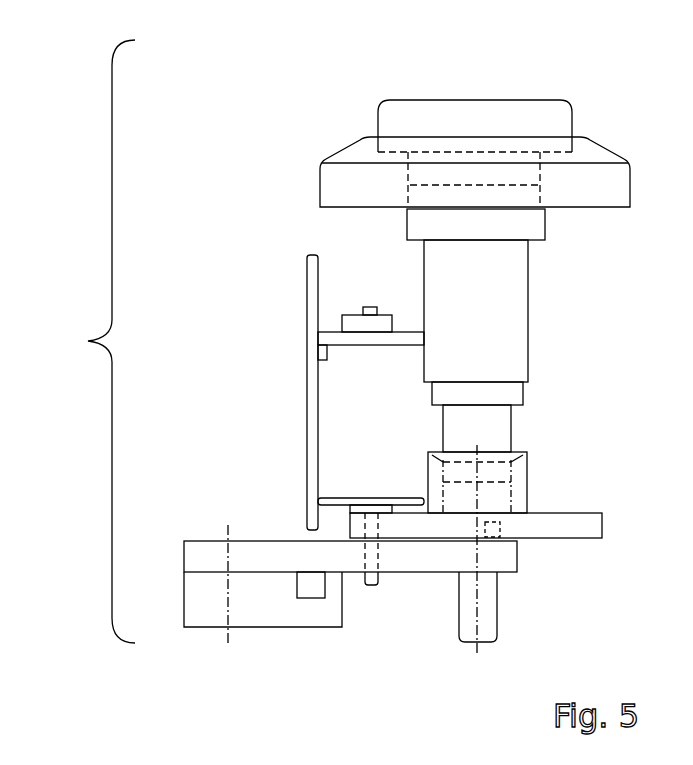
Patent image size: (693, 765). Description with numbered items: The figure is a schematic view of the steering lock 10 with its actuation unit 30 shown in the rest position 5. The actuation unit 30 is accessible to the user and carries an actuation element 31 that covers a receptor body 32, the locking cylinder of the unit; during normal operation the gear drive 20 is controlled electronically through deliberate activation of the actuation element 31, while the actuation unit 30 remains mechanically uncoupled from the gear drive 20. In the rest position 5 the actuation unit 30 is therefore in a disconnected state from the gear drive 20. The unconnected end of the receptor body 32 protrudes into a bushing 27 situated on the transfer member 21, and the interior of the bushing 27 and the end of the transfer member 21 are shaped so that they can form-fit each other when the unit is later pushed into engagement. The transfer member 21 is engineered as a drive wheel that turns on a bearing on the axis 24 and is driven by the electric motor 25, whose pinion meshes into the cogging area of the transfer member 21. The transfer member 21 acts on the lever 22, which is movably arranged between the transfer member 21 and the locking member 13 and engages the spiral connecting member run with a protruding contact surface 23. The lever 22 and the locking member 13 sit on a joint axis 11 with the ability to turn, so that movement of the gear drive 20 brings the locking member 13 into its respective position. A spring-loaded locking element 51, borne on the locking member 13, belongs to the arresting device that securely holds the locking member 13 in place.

The steering lock 10 is at (86, 341).
The actuation unit 30 is at (522, 88).
The actuation element 31 is at (440, 110).
The receptor body 32 is at (545, 233).
The rest position 5 is at (607, 352).
The bushing 27 is at (521, 458).
The axis 24 is at (478, 503).
The transfer member 21 is at (577, 525).
The contact surface 23 is at (500, 527).
The gear drive 20 is at (524, 547).
The lever 22 is at (392, 553).
The locking member 13 is at (322, 617).
The locking element 51 is at (312, 583).
The joint axis 11 is at (227, 532).
The electric motor 25 is at (328, 413).